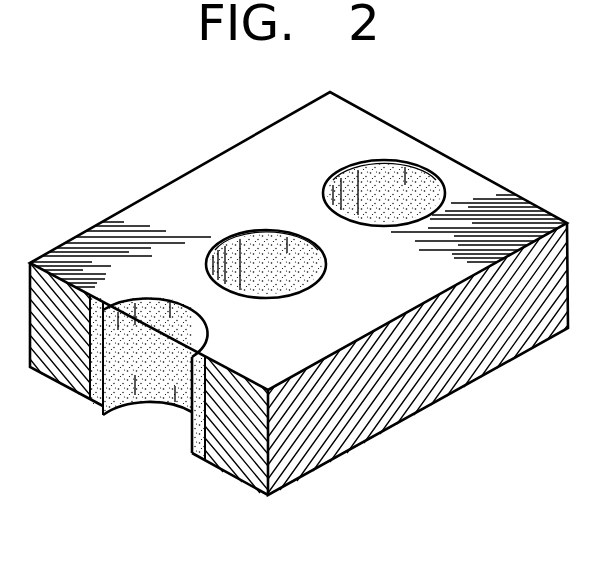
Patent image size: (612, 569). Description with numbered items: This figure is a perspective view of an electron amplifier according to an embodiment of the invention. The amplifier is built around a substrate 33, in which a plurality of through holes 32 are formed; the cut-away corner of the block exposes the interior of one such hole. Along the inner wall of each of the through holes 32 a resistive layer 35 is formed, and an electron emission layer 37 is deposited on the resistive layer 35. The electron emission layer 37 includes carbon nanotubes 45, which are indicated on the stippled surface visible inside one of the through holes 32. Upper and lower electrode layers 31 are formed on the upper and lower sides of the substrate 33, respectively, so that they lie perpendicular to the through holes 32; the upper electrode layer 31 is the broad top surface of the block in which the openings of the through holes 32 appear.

The upper and lower electrode layers 31 is at (528, 215).
The through holes 32 is at (427, 185).
The carbon nanotubes 45 is at (383, 190).
The substrate 33 is at (233, 468).
The resistive layer 35 is at (197, 461).
The electron emission layer 37 is at (190, 443).